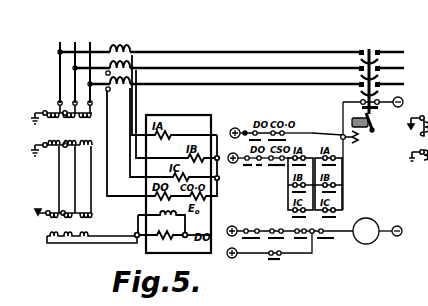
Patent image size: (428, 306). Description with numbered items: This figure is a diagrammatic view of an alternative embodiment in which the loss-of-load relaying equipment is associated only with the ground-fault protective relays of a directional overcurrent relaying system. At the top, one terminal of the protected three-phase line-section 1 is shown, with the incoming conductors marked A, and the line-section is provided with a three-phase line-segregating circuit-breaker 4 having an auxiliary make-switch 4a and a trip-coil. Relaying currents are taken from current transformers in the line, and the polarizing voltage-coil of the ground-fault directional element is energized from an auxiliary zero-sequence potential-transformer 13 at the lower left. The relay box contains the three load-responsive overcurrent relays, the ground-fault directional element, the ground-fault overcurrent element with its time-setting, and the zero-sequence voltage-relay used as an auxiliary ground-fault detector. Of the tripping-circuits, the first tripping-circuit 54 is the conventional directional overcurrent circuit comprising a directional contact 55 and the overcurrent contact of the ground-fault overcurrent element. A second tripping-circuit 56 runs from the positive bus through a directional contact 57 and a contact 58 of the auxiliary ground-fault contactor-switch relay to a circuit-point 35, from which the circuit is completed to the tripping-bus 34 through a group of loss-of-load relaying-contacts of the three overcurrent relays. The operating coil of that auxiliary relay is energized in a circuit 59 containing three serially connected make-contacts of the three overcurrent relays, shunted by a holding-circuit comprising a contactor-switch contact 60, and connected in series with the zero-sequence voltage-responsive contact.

The protected three-phase line-section 1 is at (197, 84).
The bus conductors A is at (75, 63).
The line-segregating circuit-breaker 4 is at (366, 84).
The auxiliary make-switch 4a is at (358, 101).
The auxiliary potential transformer 13 is at (86, 221).
The tripping-bus 34 is at (348, 142).
The circuit-point 35 is at (298, 141).
The first tripping-circuit 54 is at (309, 139).
The directional DO-contact 55 is at (243, 129).
The second tripping-circuit 56 is at (262, 162).
The directional DO-contact 57 is at (244, 162).
The contact of the auxiliary relay CSO 58 is at (284, 162).
The operating-coil circuit 59 is at (259, 226).
The CSO-contact 60 is at (283, 258).